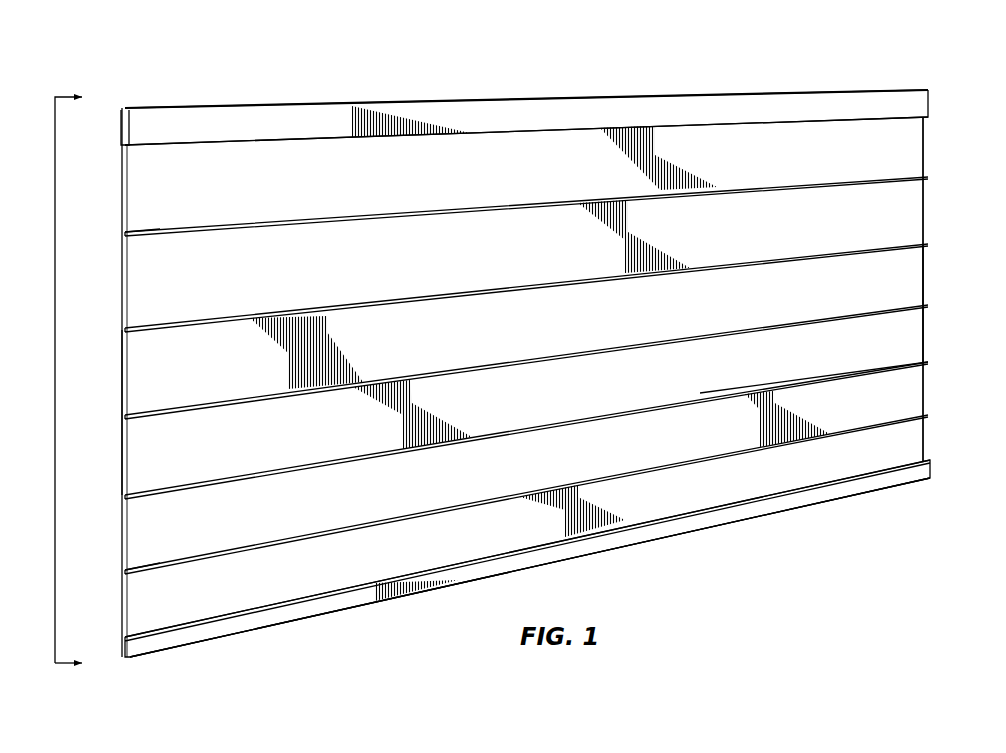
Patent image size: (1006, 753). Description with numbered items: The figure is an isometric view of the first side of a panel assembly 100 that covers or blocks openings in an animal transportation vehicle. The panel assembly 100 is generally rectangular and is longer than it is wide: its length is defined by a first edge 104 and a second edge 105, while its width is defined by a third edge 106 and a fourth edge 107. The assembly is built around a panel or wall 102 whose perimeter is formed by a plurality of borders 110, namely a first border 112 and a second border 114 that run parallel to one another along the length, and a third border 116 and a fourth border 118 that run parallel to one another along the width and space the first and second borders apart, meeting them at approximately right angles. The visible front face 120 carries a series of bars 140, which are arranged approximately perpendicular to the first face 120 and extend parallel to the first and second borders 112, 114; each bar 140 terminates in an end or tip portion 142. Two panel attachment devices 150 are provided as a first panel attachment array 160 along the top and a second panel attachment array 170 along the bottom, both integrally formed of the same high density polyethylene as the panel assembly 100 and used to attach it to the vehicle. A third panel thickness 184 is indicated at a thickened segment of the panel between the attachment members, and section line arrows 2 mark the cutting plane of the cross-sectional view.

The panel assembly 100 is at (721, 88).
The panel or wall 102 is at (850, 294).
The first edge 104 is at (620, 95).
The second edge 105 is at (425, 597).
The third edge 106 is at (122, 380).
The fourth edge 107 is at (925, 392).
The borders 110 is at (928, 130).
The first border 112 is at (518, 113).
The second border 114 is at (712, 518).
The third border 116 is at (122, 480).
The fourth border 118 is at (925, 232).
The first face 120 is at (868, 345).
The bars 140 is at (198, 238).
The end or tip portion 142 is at (152, 238).
The panel attachment devices 150 is at (118, 104).
The first panel attachment array 160 is at (230, 100).
The second panel attachment array 170 is at (297, 630).
The third panel thickness 184 is at (355, 104).
The section line for FIG. 2 is at (77, 382).